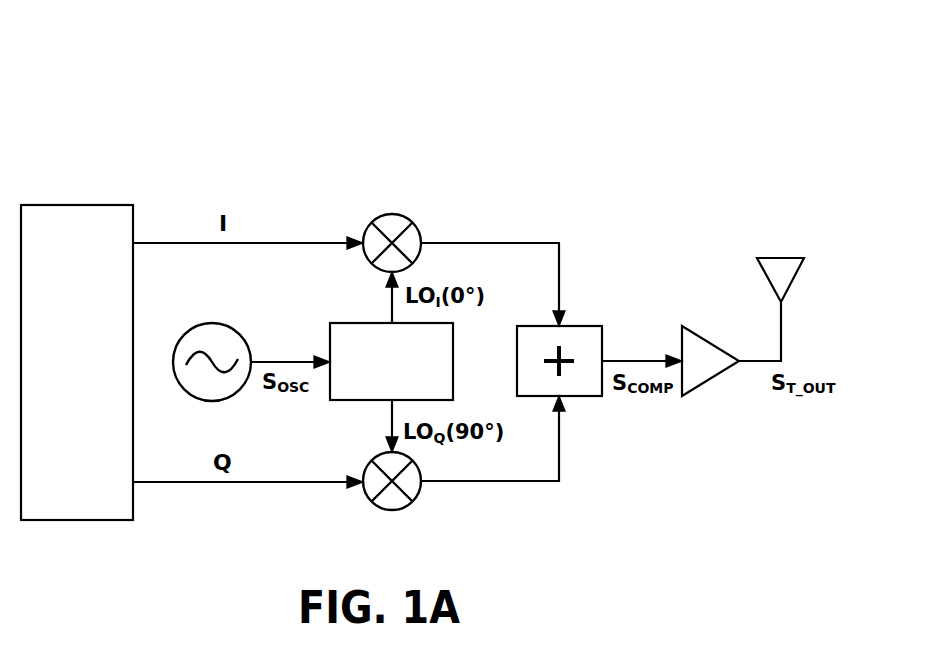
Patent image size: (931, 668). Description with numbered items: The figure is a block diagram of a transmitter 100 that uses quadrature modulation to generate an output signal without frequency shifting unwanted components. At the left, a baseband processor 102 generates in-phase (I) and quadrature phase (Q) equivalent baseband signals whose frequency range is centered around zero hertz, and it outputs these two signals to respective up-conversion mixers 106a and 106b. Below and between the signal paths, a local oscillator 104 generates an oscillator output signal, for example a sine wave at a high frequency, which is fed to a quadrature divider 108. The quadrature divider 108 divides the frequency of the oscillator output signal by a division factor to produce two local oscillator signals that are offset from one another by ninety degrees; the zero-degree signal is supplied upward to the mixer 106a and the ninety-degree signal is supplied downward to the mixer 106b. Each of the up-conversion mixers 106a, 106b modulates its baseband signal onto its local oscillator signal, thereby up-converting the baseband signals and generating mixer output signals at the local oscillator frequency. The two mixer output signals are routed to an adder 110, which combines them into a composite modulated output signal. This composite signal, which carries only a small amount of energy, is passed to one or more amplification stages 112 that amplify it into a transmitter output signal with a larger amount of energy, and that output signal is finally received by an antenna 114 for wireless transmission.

The transmitter 100 is at (95, 48).
The baseband processor 102 is at (133, 205).
The local oscillator 104 is at (236, 332).
The up-conversion mixer 106a is at (408, 221).
The up-conversion mixer 106b is at (408, 502).
The quadrature divider 108 is at (372, 387).
The adder 110 is at (578, 326).
The amplification stages 112 is at (700, 388).
The antenna 114 is at (766, 258).